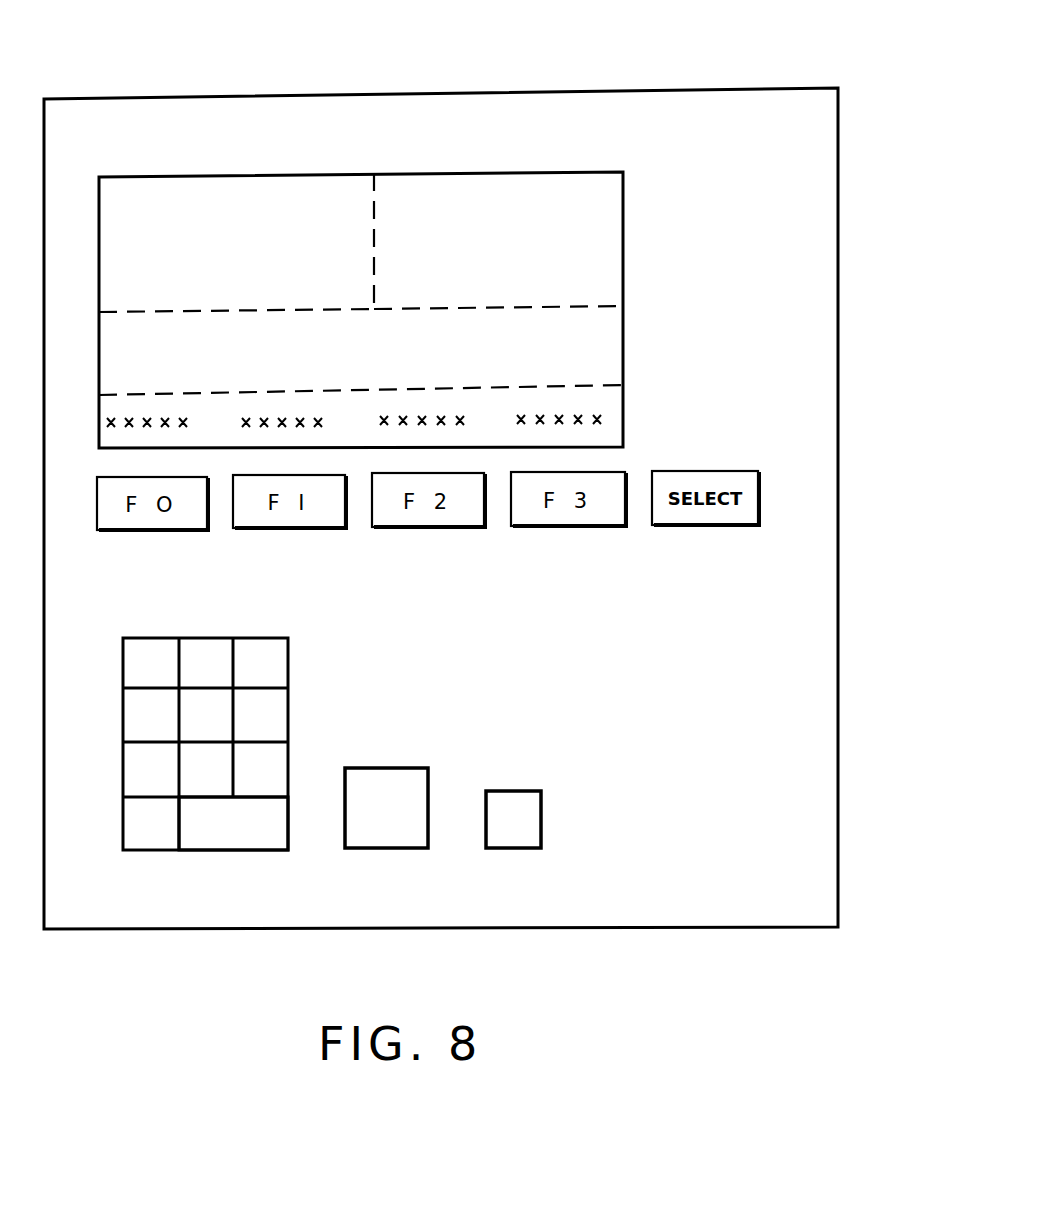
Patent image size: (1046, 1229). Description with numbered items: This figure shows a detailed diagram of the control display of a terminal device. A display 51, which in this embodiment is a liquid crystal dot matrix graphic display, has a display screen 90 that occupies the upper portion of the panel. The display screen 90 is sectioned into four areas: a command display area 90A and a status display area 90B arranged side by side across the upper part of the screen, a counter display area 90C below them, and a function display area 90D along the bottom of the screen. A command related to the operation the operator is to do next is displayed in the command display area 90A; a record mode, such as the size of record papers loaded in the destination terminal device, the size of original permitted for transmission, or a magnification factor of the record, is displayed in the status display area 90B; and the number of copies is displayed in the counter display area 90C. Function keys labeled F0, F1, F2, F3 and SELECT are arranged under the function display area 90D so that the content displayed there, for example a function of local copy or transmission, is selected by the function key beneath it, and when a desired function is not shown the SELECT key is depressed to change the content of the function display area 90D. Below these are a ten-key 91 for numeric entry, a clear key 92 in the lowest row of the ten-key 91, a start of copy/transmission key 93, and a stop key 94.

The display 51 is at (694, 88).
The display screen 90 is at (414, 245).
The command display area 90A is at (342, 177).
The status display area 90B is at (533, 172).
The counter display area 90C is at (623, 333).
The function display area 90D is at (623, 413).
The ten-key 91 is at (290, 666).
The clear key 92 is at (247, 851).
The start of copy/transmission key 93 is at (408, 768).
The stop key 94 is at (520, 791).